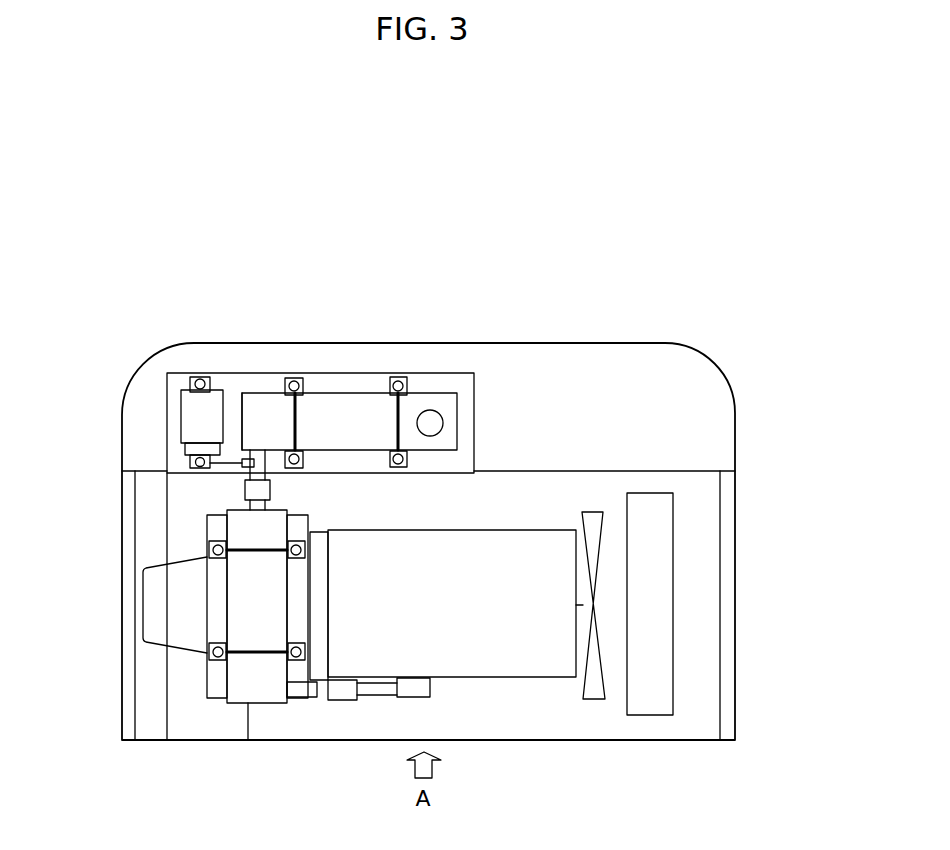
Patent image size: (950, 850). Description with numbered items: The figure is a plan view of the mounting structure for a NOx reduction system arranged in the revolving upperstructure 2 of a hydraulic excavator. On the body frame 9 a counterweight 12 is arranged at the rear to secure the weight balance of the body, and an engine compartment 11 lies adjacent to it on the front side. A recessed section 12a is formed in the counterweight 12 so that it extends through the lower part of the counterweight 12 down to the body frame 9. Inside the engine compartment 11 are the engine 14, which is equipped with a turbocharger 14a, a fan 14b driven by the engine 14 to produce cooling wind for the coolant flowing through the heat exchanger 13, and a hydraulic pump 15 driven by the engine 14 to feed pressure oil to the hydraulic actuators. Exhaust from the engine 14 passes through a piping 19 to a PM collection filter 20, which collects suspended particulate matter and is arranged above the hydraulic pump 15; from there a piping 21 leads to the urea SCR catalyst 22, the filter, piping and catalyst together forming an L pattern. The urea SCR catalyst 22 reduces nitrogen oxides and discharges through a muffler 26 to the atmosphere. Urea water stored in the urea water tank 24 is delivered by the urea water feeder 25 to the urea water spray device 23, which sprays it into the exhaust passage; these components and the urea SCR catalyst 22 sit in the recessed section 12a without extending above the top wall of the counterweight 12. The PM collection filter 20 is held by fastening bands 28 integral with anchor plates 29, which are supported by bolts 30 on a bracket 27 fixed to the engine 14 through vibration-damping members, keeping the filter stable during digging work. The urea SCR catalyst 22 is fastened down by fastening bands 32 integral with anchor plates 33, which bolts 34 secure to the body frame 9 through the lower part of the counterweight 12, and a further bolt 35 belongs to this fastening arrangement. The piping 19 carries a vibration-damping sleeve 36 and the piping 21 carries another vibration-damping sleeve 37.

The revolving upperstructure 2 is at (742, 555).
The body frame 9 is at (120, 550).
The engine compartment 11 is at (698, 677).
The counterweight 12 is at (626, 343).
The recessed section 12a is at (345, 373).
The heat exchanger 13 is at (650, 568).
The engine 14 is at (522, 553).
The turbocharger 14a is at (423, 687).
The fan 14b is at (603, 532).
The hydraulic pump 15 is at (157, 582).
The piping 19 is at (380, 695).
The PM collection filter 20 is at (253, 607).
The piping 21 is at (247, 504).
The urea SCR catalyst 22 is at (358, 418).
The urea water spray device 23 is at (243, 427).
The urea water tank 24 is at (188, 422).
The urea water feeder 25 is at (188, 448).
The muffler 26 is at (436, 420).
The bracket 27 is at (210, 657).
The fastening band 28 is at (255, 551).
The anchor plate 29 is at (212, 561).
The bolt 30 is at (209, 553).
The fastening band 32 is at (297, 393).
The anchor plate 33 is at (292, 380).
The bolt 34 is at (295, 378).
The bolt 35 is at (199, 377).
The vibration-damping sleeve 36 is at (341, 693).
The vibration-damping sleeve 37 is at (250, 487).